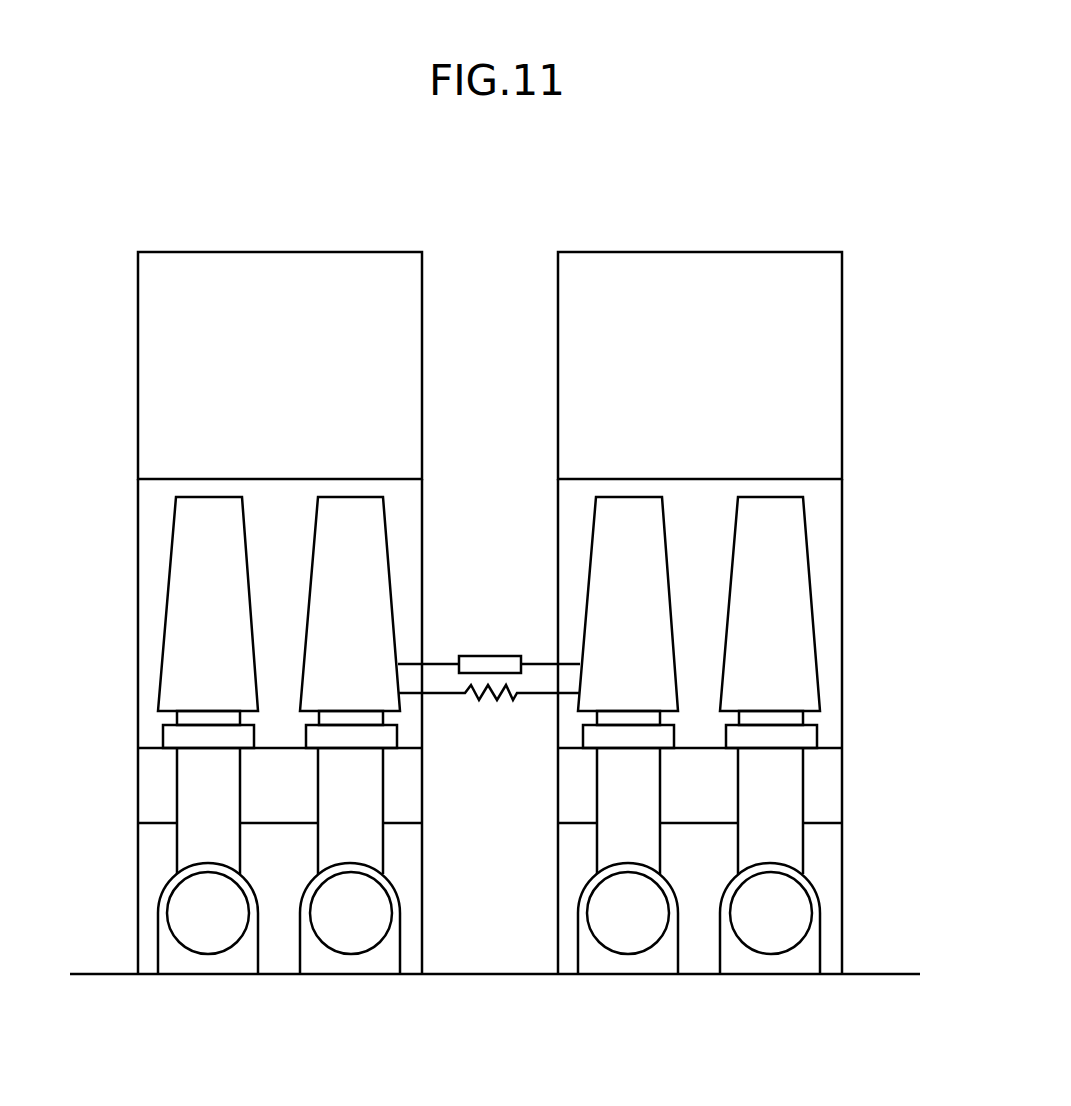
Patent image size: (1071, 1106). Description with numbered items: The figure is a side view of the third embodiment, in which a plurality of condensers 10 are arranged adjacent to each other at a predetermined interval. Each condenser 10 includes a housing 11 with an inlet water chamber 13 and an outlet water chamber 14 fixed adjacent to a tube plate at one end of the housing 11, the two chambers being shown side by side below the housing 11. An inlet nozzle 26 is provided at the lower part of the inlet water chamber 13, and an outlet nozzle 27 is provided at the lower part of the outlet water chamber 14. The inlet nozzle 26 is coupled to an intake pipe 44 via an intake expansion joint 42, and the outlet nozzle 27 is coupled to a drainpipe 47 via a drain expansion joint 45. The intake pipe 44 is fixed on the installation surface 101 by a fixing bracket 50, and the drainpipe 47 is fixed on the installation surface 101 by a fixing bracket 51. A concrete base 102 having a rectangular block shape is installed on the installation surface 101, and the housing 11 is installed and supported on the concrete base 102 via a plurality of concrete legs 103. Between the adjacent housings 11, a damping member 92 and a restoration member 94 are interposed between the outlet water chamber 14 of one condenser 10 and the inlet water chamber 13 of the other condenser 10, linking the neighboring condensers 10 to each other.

The condenser 10 is at (437, 236).
The housing 11 is at (143, 390).
The inlet water chamber 13 is at (185, 536).
The outlet water chamber 14 is at (372, 528).
The inlet nozzle 26 is at (206, 718).
The outlet nozzle 27 is at (364, 715).
The intake expansion joint 42 is at (168, 737).
The drain expansion joint 45 is at (385, 742).
The intake pipe 44 is at (200, 923).
The drainpipe 47 is at (338, 923).
The fixing bracket 50 is at (167, 896).
The fixing bracket 51 is at (395, 933).
The damping member 92 is at (492, 662).
The restoration member 94 is at (515, 690).
The installation surface 101 is at (876, 974).
The concrete base 102 is at (405, 860).
The concrete legs 103 is at (408, 794).